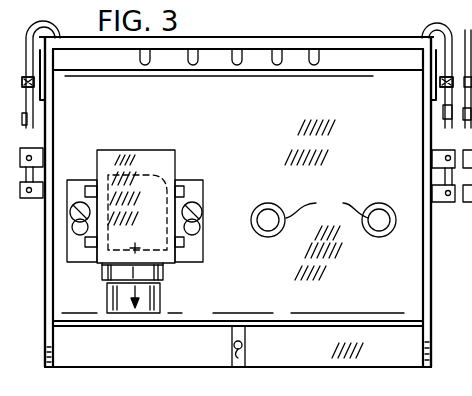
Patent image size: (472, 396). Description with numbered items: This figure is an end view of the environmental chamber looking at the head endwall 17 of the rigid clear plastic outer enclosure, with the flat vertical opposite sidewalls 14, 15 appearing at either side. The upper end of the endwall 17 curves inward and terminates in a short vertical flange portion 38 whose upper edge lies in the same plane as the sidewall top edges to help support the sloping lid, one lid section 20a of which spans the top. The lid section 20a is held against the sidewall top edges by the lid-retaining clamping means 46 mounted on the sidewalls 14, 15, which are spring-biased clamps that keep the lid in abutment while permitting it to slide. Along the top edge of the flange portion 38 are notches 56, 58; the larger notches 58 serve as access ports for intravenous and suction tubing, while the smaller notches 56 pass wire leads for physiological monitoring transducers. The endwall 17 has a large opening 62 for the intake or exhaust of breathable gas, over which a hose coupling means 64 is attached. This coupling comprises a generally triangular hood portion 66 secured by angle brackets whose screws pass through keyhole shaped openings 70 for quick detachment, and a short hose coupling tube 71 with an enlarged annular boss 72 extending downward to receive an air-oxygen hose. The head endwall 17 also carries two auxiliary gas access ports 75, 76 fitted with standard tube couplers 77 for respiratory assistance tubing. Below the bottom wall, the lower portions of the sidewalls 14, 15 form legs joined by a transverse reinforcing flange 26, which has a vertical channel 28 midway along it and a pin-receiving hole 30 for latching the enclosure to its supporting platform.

The sidewall 14 is at (432, 208).
The sidewall 15 is at (43, 240).
The head endwall 17 is at (262, 140).
The lid section 20a is at (256, 36).
The transverse reinforcing flange 26 is at (163, 358).
The channel 28 is at (234, 347).
The pin-receiving hole 30 is at (241, 347).
The vertical flange portion 38 is at (363, 57).
The lid-retaining clamping means 46 is at (58, 125).
The notch 56 is at (278, 62).
The notch 58 is at (145, 62).
The opening 62 is at (183, 158).
The hose coupling means 64 is at (168, 145).
The hood portion 66 is at (167, 262).
The keyhole shaped opening 70 is at (200, 247).
The hose coupling tube 71 is at (160, 302).
The annular boss 72 is at (165, 273).
The gas access port 75 is at (268, 218).
The gas access port 76 is at (379, 218).
The tube coupler 77 is at (327, 205).